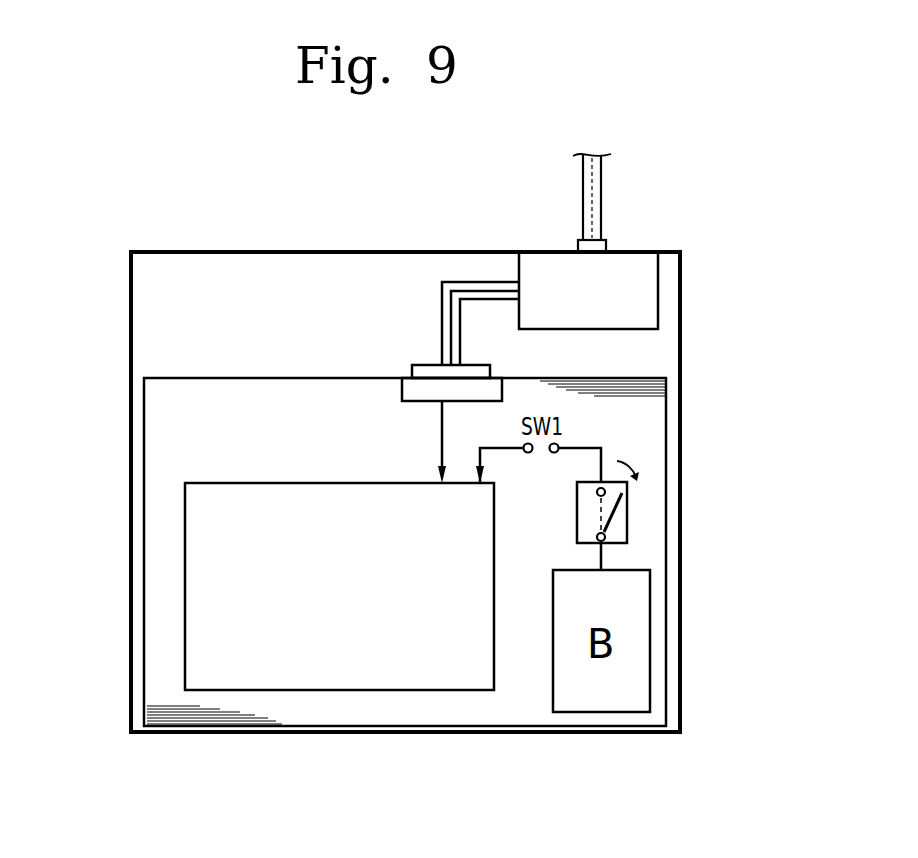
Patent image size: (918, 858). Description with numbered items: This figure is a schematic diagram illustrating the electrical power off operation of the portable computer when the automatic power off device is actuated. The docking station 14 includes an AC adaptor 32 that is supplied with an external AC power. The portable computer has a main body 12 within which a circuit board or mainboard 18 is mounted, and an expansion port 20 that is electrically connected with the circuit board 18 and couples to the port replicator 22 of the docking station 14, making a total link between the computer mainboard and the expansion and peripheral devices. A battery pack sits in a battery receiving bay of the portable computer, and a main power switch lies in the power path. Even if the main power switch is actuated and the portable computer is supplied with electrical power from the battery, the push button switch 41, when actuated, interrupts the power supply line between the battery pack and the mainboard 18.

The main body 12 is at (292, 705).
The docking station 14 is at (163, 295).
The circuit board 18 is at (383, 668).
The expansion port 20 is at (408, 392).
The port replicator 22 is at (427, 370).
The AC adaptor 32 is at (645, 293).
The push button switch 41 is at (627, 508).